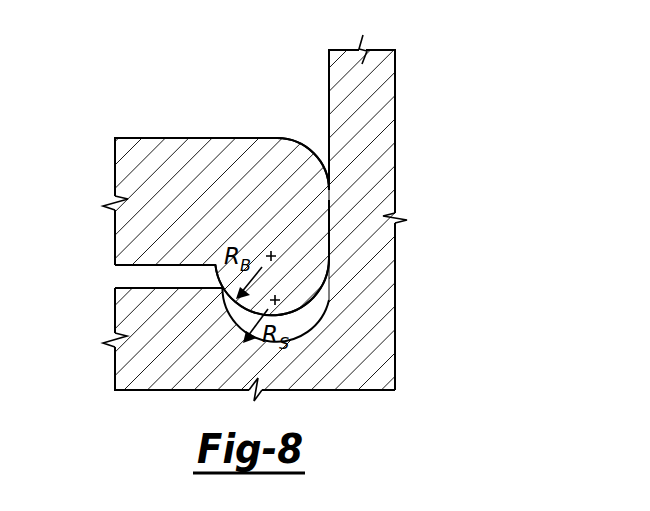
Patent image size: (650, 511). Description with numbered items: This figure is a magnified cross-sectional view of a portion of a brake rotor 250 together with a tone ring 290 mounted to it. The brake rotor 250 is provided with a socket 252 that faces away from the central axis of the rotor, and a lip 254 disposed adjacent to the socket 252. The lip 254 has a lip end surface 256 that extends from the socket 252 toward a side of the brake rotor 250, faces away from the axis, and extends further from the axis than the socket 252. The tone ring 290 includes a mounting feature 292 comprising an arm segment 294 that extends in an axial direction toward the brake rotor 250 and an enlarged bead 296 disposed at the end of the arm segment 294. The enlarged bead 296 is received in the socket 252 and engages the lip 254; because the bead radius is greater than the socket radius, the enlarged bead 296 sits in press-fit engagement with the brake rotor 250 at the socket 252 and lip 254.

The brake rotor 250 is at (375, 97).
The socket 252 is at (297, 342).
The lip 254 is at (125, 373).
The lip end surface 256 is at (173, 288).
The tone ring 290 is at (148, 138).
The mounting feature 292 is at (274, 110).
The arm segment 294 is at (195, 138).
The enlarged bead 296 is at (320, 236).